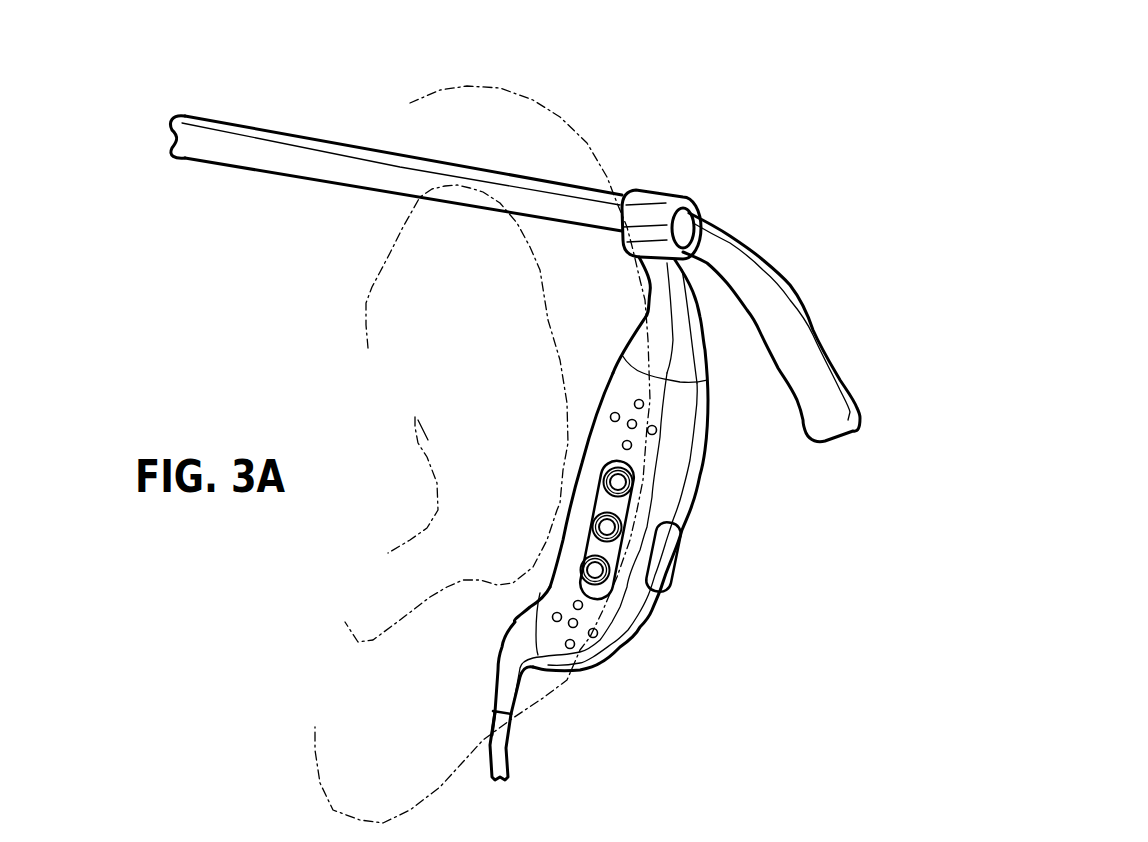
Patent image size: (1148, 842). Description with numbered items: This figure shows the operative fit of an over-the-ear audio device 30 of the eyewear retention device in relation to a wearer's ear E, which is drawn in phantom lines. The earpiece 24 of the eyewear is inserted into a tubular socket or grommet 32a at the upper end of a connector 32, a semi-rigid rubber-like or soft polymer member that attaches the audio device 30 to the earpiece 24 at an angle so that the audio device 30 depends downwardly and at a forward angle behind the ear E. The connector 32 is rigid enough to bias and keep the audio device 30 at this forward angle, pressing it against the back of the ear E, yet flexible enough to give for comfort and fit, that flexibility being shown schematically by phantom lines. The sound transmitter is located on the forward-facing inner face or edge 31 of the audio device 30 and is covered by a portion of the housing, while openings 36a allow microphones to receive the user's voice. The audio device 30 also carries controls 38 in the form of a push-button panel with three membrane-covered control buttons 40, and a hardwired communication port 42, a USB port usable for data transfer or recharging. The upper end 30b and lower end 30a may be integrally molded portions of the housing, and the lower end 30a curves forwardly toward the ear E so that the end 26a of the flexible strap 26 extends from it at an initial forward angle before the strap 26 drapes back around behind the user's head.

The ear E is at (510, 97).
The earpiece 24 is at (758, 292).
The flexible strap 26 is at (497, 762).
The strap end 26a is at (495, 742).
The over-the-ear audio device 30 is at (712, 470).
The lower end of audio device 30a is at (506, 672).
The upper end of audio device 30b is at (612, 373).
The forward-facing inner face 31 is at (575, 508).
The connector 32 is at (682, 316).
The tubular socket or grommet 32a is at (648, 202).
The openings 36a is at (645, 402).
The controls 38 is at (627, 506).
The control buttons 40 is at (595, 568).
The hardwired communication port 42 is at (668, 550).